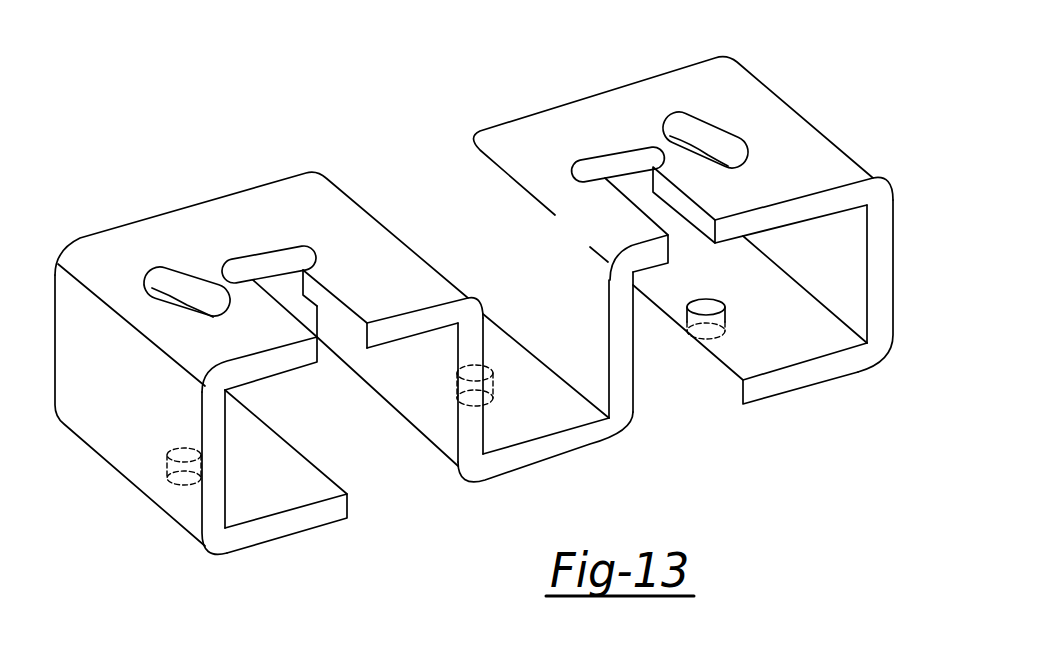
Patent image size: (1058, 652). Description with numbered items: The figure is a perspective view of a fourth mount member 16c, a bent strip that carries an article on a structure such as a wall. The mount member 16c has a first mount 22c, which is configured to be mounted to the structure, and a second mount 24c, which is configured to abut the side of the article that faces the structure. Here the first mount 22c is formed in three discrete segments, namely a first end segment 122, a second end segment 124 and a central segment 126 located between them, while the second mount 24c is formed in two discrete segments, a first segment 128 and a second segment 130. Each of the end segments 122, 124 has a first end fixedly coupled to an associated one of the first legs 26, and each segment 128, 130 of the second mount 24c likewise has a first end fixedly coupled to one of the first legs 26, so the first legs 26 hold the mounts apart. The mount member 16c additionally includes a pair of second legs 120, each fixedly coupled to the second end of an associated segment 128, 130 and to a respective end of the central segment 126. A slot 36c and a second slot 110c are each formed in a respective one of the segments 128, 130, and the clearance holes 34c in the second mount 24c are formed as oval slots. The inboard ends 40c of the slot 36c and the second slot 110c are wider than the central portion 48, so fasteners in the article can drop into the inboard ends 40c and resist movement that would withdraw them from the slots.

The fourth mount member 16c is at (134, 168).
The first mount 22c is at (263, 572).
The second mount 24c is at (467, 63).
The first legs 26 is at (215, 503).
The clearance holes 34c is at (187, 304).
The slot 36c is at (330, 328).
The inboard ends 40c is at (246, 261).
The central portion 48 is at (291, 310).
The second slot 110c is at (673, 222).
The second legs 120 is at (467, 430).
The first end segment 122 is at (317, 515).
The second end segment 124 is at (822, 372).
The central segment 126 is at (542, 453).
The first segment 128 is at (333, 217).
The second segment 130 is at (530, 140).